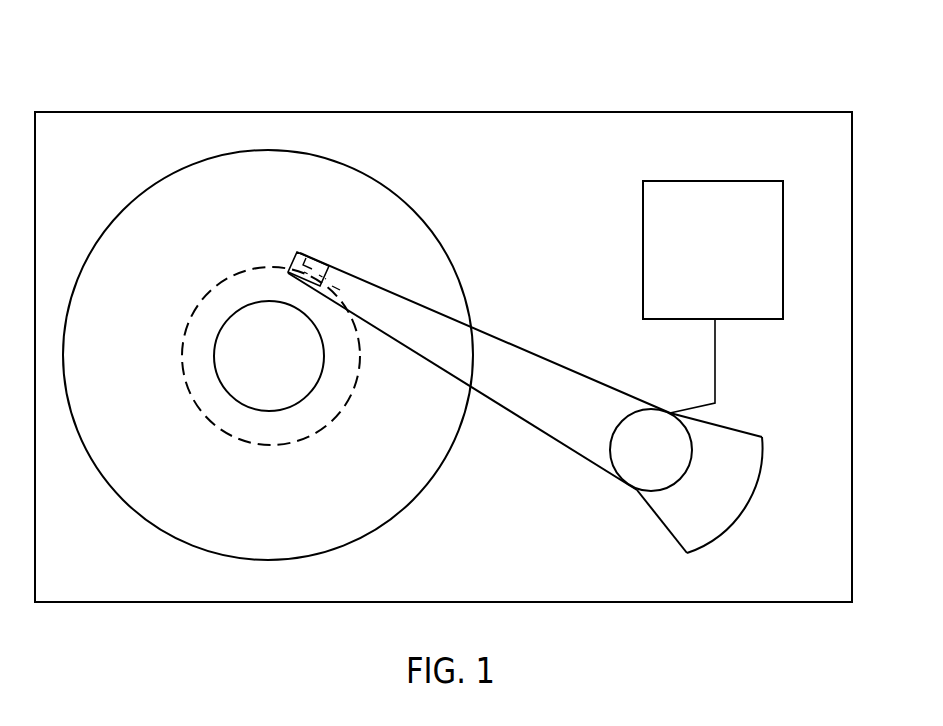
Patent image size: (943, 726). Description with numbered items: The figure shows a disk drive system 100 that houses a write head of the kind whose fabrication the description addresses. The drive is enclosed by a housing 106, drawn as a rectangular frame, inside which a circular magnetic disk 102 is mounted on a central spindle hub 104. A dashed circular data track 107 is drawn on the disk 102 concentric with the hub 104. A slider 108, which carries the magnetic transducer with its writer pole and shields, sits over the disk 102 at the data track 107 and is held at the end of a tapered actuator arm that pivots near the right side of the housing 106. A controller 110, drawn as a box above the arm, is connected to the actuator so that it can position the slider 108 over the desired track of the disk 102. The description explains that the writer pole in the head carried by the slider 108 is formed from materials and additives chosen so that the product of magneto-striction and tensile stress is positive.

The hard disk drive system 100 is at (217, 80).
The magnetic disk 102 is at (393, 190).
The spindle hub 104 is at (288, 358).
The housing 106 is at (577, 112).
The data track 107 is at (245, 268).
The slider with read/write head 108 is at (322, 268).
The controller 110 is at (727, 264).